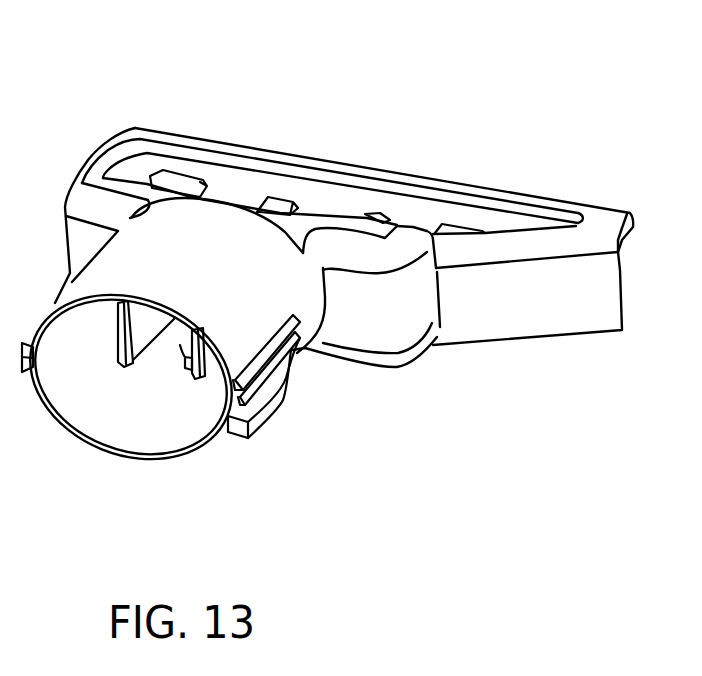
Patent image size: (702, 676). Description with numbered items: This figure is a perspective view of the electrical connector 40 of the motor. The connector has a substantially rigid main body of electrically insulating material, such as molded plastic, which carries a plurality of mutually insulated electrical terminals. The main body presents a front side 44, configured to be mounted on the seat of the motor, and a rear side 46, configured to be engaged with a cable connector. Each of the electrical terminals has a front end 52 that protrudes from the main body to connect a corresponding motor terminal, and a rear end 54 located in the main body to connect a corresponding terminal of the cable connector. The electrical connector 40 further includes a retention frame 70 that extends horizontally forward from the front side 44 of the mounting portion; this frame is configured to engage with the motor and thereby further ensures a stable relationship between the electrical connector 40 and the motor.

The retention frame 70 is at (543, 207).
The front end 52 is at (452, 226).
The front side 44 is at (227, 197).
The electrical connector 40 is at (423, 352).
The rear side 46 is at (195, 433).
The rear end 54 is at (196, 360).